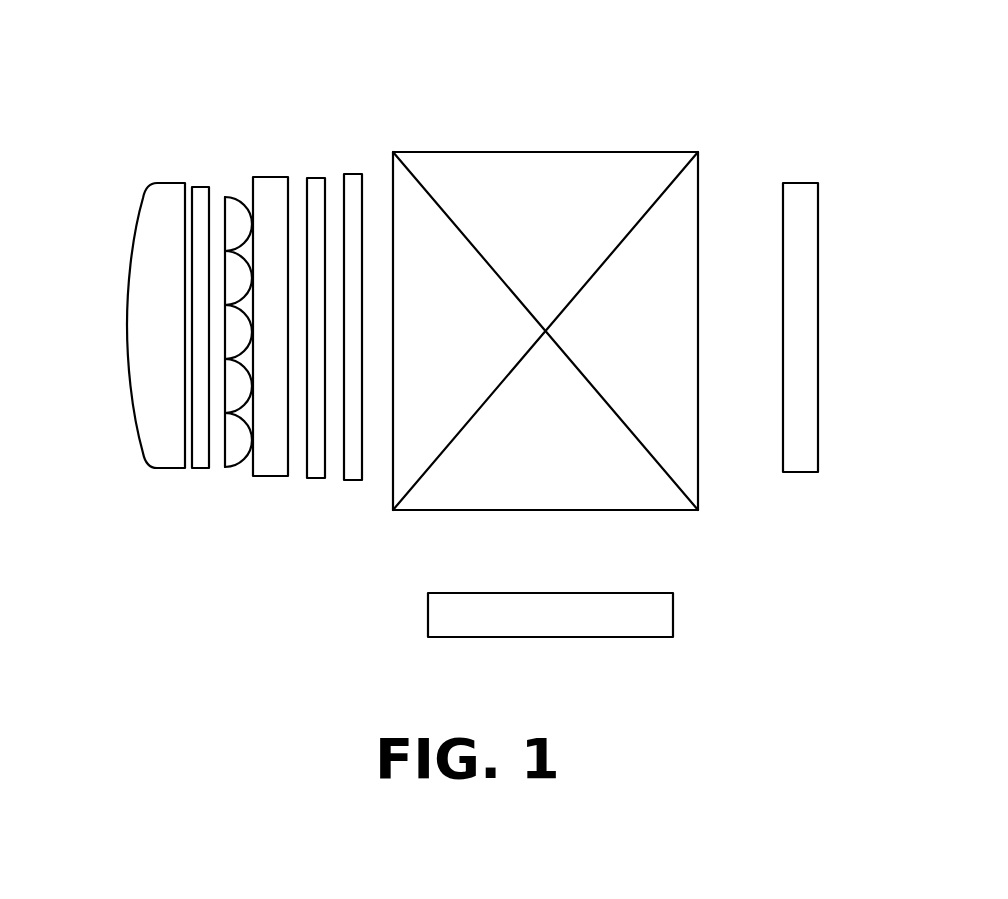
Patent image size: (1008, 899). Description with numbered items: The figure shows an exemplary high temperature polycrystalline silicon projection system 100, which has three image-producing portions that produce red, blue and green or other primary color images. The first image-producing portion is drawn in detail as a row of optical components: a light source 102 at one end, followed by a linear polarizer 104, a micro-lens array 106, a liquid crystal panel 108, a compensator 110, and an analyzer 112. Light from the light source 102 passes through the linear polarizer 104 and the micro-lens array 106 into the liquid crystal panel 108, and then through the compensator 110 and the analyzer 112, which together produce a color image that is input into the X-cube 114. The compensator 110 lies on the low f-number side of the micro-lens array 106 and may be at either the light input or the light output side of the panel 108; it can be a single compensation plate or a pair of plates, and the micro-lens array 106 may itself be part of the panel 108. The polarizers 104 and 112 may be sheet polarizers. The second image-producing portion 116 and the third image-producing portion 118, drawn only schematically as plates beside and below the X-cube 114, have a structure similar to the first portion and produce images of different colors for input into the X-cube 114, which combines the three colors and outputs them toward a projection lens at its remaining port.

The high temperature polycrystalline silicon projection system 100 is at (877, 68).
The light source 102 is at (143, 322).
The linear polarizer 104 is at (198, 468).
The micro-lens array 106 is at (225, 197).
The liquid crystal panel 108 is at (267, 467).
The compensator 110 is at (320, 185).
The analyzer 112 is at (348, 470).
The X-cube 114 is at (565, 152).
The second image-producing portion 116 is at (813, 417).
The third image-producing portion 118 is at (663, 620).